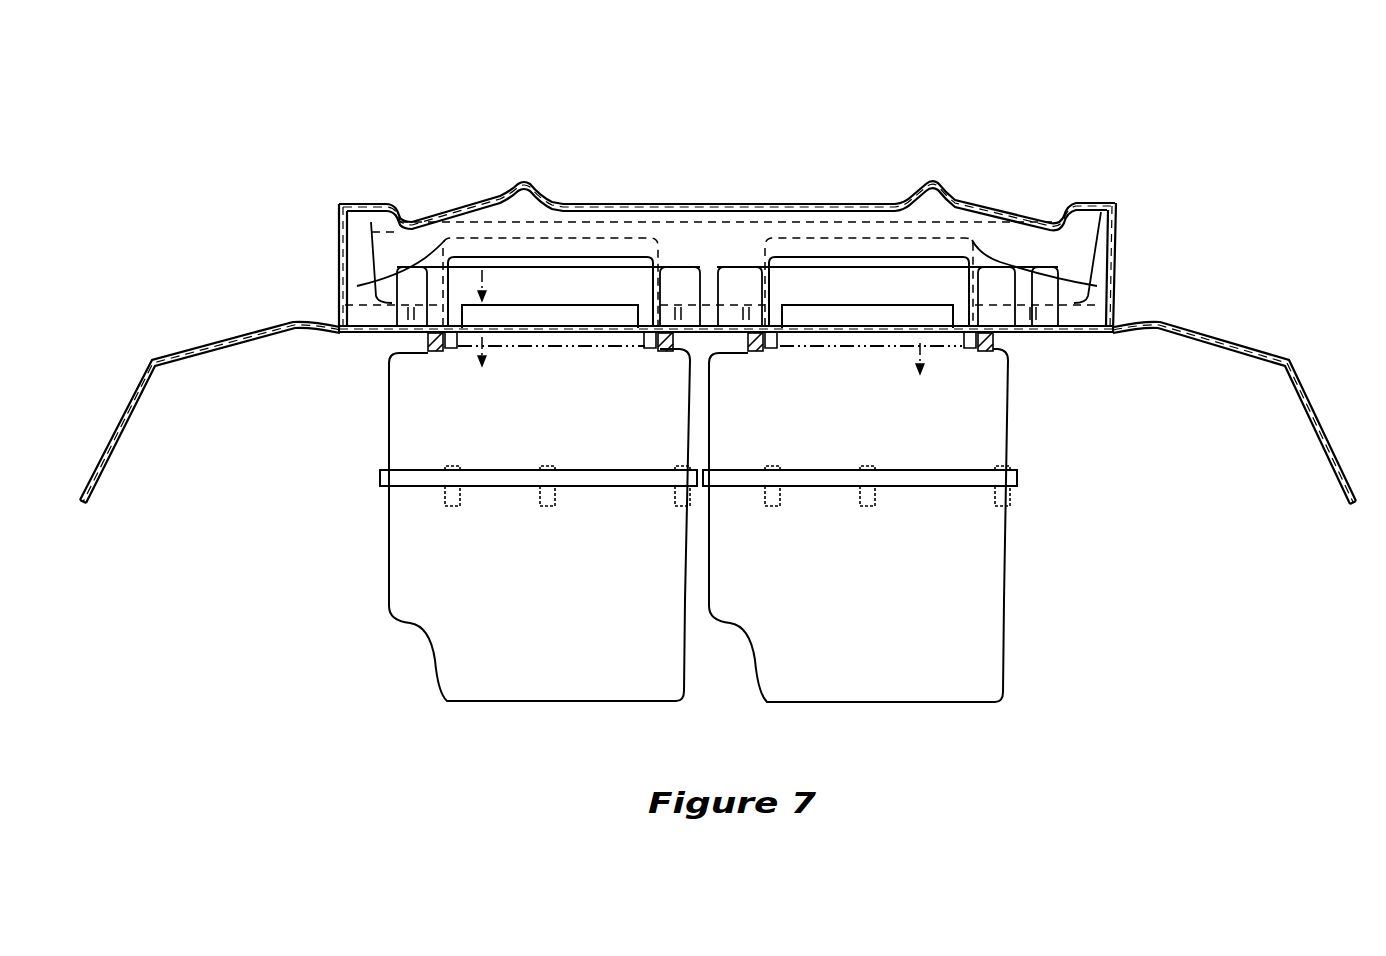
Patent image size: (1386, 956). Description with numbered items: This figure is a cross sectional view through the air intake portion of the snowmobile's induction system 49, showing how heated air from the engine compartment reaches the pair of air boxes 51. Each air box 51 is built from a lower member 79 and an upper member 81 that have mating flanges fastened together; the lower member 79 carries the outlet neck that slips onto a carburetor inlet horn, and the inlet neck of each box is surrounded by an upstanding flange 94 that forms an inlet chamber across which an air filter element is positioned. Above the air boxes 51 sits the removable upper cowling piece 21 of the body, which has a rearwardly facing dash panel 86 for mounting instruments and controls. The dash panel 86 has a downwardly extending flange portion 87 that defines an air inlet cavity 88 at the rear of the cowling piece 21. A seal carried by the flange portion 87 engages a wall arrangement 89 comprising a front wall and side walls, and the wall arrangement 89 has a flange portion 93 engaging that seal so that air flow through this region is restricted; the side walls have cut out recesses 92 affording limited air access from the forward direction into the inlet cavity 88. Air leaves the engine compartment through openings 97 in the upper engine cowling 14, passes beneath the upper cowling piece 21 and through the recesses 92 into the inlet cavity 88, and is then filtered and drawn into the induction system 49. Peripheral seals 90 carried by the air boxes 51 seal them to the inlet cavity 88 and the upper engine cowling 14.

The upper engine cowling 14 is at (1245, 340).
The upper cowling piece 21 is at (338, 237).
The induction system 49 is at (813, 78).
The air box 51 is at (371, 530).
The lower member 79 is at (412, 622).
The upper member 81 is at (401, 426).
The dash panel 86 is at (788, 200).
The flange portion 87 is at (526, 186).
The air inlet cavity 88 is at (357, 288).
The wall arrangement 89 is at (720, 228).
The peripheral seal 90 is at (393, 336).
The cut out recess 92 is at (499, 260).
The flange portion 93 is at (512, 233).
The upstanding flange 94 is at (538, 303).
The opening 97 is at (659, 350).